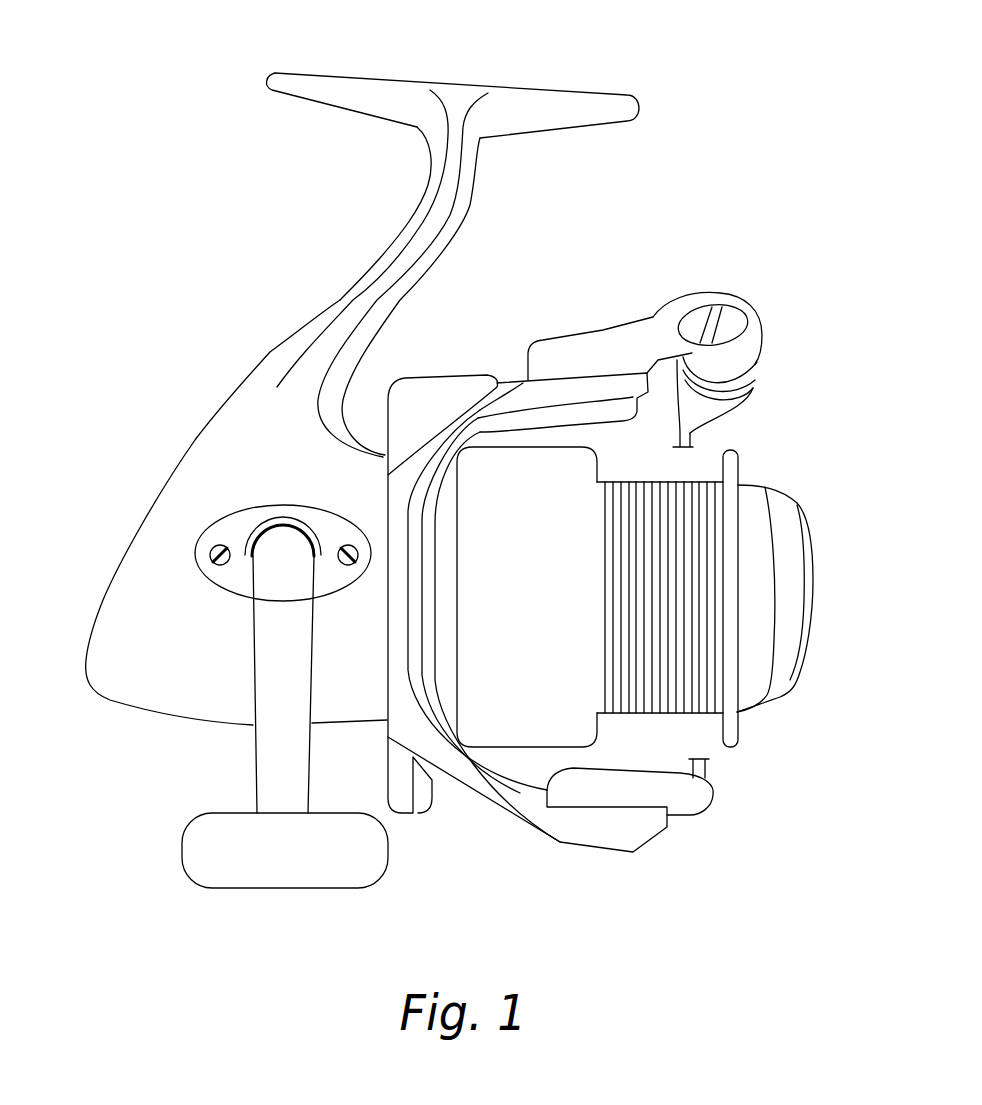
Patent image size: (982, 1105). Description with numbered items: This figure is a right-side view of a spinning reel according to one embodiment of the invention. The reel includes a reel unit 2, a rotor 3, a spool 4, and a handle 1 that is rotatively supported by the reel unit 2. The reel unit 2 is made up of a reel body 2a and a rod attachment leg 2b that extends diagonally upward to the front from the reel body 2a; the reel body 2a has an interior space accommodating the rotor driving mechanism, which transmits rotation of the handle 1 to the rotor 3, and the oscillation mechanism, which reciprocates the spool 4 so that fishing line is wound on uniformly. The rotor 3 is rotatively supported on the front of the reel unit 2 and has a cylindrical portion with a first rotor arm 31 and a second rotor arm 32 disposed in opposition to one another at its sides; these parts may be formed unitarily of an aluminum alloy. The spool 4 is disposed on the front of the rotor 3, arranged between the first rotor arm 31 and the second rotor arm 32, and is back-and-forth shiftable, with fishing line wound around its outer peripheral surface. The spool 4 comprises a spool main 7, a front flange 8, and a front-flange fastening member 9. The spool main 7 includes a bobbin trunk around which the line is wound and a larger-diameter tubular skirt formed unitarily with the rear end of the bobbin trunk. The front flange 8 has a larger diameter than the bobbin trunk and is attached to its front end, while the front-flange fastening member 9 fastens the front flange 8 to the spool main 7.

The handle 1 is at (281, 762).
The reel unit 2 is at (362, 399).
The reel body 2a is at (172, 508).
The rod attachment leg 2b is at (270, 352).
The rotor 3 is at (575, 577).
The first rotor arm 31 is at (570, 387).
The second rotor arm 32 is at (580, 827).
The spool 4 is at (662, 565).
The spool main 7 is at (704, 479).
The front flange 8 is at (738, 477).
The front-flange fastening member 9 is at (818, 516).